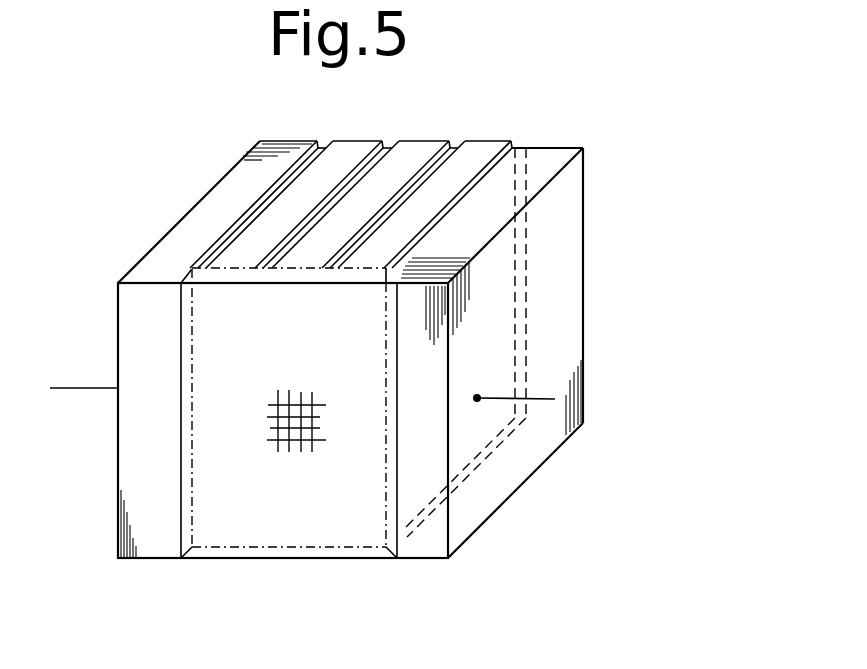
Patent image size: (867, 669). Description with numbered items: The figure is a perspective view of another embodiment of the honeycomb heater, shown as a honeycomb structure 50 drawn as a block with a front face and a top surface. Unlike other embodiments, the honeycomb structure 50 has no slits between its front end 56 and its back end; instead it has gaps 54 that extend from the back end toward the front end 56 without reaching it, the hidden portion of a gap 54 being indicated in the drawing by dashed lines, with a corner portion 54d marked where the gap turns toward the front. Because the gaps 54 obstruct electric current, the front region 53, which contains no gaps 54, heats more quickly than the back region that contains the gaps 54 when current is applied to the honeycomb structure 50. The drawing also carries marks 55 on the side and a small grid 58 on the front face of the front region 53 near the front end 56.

The honeycomb structure 50 is at (508, 520).
The front region 53 is at (210, 308).
The gaps 54 is at (517, 144).
The corner portion of slot 54d is at (398, 276).
The reference line / mark 55 is at (545, 397).
The front end 56 is at (117, 558).
The grid pattern 58 is at (262, 453).